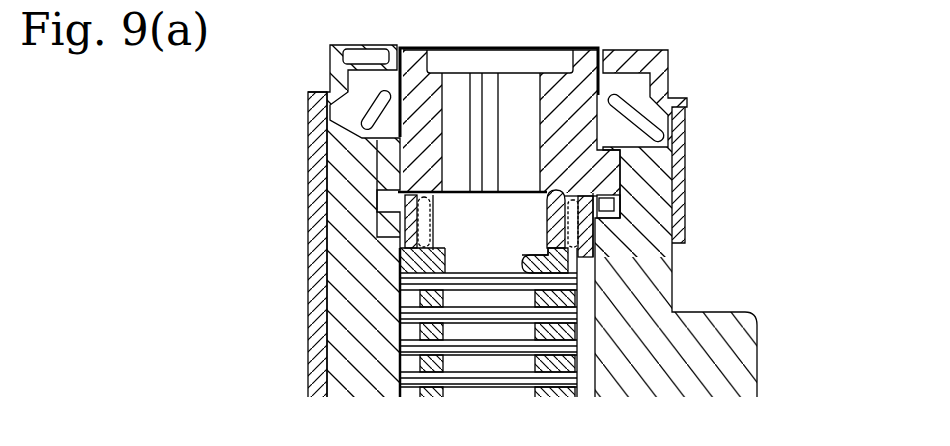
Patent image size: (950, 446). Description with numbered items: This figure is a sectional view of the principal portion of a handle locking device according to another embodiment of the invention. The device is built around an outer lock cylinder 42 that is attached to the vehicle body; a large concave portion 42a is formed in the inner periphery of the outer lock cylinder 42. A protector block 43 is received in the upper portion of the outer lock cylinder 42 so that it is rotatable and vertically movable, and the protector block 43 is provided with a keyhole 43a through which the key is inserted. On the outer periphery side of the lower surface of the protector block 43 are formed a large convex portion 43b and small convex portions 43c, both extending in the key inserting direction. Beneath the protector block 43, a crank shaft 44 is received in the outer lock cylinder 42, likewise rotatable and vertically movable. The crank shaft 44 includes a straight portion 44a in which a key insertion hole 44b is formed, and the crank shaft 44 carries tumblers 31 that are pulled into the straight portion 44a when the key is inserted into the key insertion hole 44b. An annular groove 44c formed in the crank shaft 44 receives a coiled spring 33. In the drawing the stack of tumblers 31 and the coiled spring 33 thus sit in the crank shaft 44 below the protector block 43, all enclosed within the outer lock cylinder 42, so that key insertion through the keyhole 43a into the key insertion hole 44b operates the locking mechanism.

The tumblers 31 is at (410, 378).
The coiled spring 33 is at (398, 262).
The outer lock cylinder 42 is at (323, 210).
The large concave portion 42a is at (398, 244).
The protector block 43 is at (570, 97).
The keyhole 43a is at (443, 88).
The large convex portion 43b is at (327, 182).
The small convex portions 43c is at (618, 196).
The crank shaft 44 is at (591, 324).
The straight portion 44a is at (420, 355).
The key insertion hole 44b is at (580, 257).
The annular groove 44c is at (442, 227).